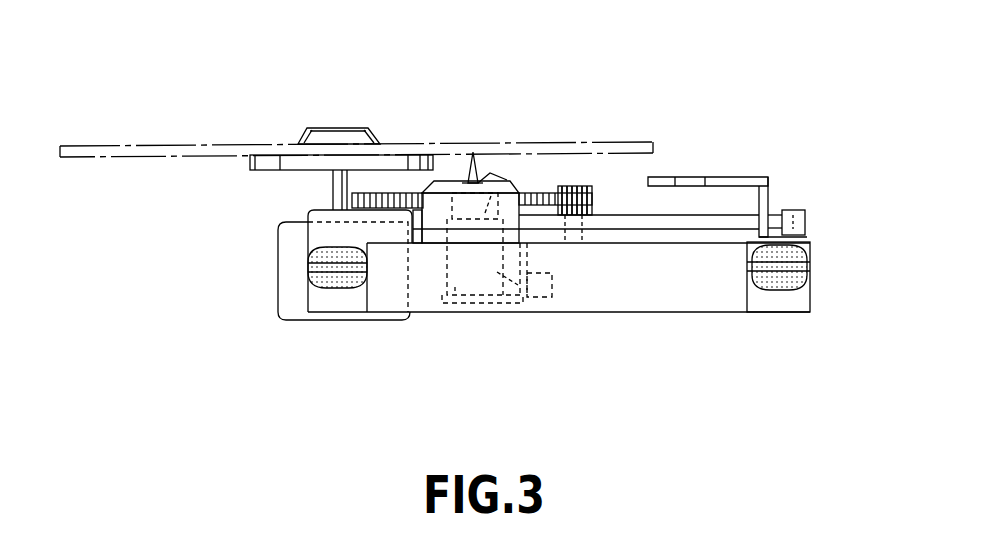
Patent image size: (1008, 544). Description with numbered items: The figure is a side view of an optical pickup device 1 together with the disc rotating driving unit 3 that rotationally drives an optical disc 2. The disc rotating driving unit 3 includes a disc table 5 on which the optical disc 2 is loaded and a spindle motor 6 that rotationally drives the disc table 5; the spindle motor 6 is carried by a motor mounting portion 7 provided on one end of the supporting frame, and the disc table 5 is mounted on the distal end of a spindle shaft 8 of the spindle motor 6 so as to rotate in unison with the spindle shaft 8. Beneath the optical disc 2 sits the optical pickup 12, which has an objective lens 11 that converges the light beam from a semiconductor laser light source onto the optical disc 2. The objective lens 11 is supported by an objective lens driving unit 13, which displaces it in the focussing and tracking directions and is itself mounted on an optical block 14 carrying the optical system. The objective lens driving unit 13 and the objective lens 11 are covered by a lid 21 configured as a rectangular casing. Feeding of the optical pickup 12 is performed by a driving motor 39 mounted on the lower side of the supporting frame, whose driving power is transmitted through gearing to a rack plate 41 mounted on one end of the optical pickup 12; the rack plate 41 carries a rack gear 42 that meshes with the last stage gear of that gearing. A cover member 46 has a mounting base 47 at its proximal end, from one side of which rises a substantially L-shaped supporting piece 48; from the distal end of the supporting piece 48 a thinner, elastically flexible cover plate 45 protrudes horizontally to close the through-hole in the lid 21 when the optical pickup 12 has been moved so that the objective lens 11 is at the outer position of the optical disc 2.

The optical pickup device 1 is at (688, 128).
The optical disc 2 is at (140, 142).
The disc rotating driving unit 3 is at (307, 134).
The disc table 5 is at (249, 158).
The spindle motor 6 is at (278, 294).
The motor mounting portion 7 is at (340, 302).
The spindle shaft 8 is at (333, 185).
The objective lens 11 is at (485, 212).
The optical pickup 12 is at (530, 310).
The objective lens driving unit 13 is at (527, 192).
The optical block 14 is at (455, 307).
The lid 21 is at (437, 180).
The driving motor 39 is at (278, 243).
The rack plate 41 is at (535, 193).
The rack gear 42 is at (548, 197).
The cover plate 45 is at (730, 176).
The cover member 46 is at (770, 177).
The mounting base 47 is at (806, 237).
The supporting piece 48 is at (771, 192).